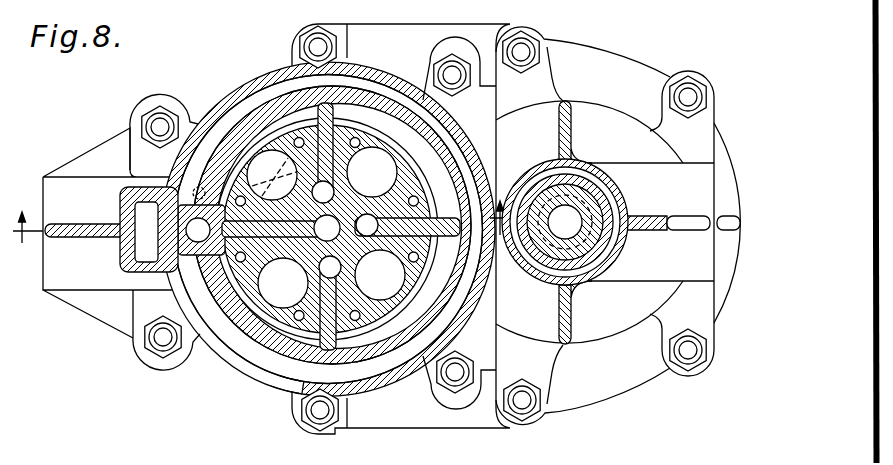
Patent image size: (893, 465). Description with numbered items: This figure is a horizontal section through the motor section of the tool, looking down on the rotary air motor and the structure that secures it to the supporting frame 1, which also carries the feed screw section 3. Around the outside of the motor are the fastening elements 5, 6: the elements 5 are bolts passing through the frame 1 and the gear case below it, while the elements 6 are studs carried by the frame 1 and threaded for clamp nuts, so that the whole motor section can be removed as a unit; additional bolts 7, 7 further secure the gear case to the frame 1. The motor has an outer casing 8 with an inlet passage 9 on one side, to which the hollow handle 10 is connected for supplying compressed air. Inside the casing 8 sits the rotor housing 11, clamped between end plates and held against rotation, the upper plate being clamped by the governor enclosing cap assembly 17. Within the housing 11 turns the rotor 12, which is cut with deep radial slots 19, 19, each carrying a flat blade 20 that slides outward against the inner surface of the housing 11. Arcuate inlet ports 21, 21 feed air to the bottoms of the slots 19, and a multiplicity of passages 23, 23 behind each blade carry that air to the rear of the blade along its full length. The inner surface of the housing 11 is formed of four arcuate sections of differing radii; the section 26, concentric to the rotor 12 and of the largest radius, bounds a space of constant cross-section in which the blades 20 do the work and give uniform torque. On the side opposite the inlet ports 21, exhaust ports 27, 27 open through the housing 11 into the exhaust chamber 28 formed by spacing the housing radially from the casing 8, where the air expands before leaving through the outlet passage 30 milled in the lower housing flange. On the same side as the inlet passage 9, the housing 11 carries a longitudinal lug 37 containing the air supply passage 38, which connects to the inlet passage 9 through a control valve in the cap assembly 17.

The supporting frame 1 is at (742, 212).
The feed screw section 3 is at (660, 214).
The fastening elements 5 is at (160, 127).
The fastening elements 6 is at (450, 68).
The fasteners 7 is at (305, 42).
The outer casing 8 is at (240, 362).
The inlet passage 9 is at (145, 213).
The hollow handle 10 is at (259, 227).
The rotor housing 11 is at (298, 370).
The rotor 12 is at (408, 289).
The governor enclosing cap assembly 17 is at (430, 219).
The radial slots 19 is at (331, 227).
The flat blades 20 is at (350, 110).
The inlet ports 21 is at (272, 175).
The passages 23 is at (272, 102).
The section 26 is at (365, 459).
The exhaust ports 27 is at (390, 377).
The exhaust chamber 28 is at (292, 395).
The outlet passage 30 is at (238, 128).
The lug 37 is at (140, 269).
The air supply passage 38 is at (165, 185).